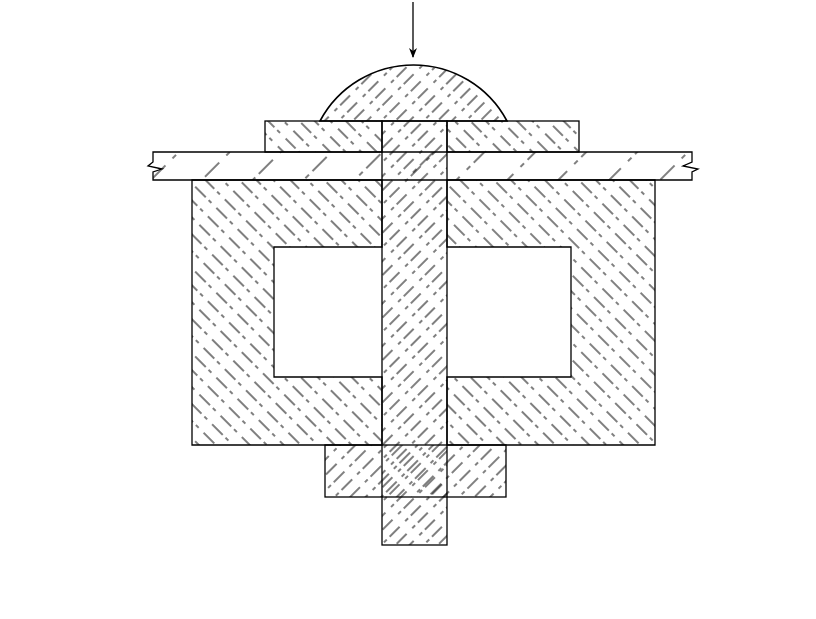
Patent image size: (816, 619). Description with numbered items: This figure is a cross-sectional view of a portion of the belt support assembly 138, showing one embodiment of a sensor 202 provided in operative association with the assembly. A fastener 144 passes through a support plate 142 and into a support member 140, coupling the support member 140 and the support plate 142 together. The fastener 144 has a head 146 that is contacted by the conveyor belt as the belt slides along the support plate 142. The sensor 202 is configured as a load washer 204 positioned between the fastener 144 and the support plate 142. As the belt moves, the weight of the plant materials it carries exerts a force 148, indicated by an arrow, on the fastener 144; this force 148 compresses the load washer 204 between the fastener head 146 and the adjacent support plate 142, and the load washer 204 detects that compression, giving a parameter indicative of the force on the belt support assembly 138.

The belt support assembly 138 is at (140, 84).
The support member 140 is at (192, 328).
The support plate 142 is at (663, 152).
The fastener 144 is at (412, 549).
The head 146 is at (507, 118).
The force 148 is at (417, 26).
The sensor 202 is at (557, 117).
The load washer 204 is at (288, 120).